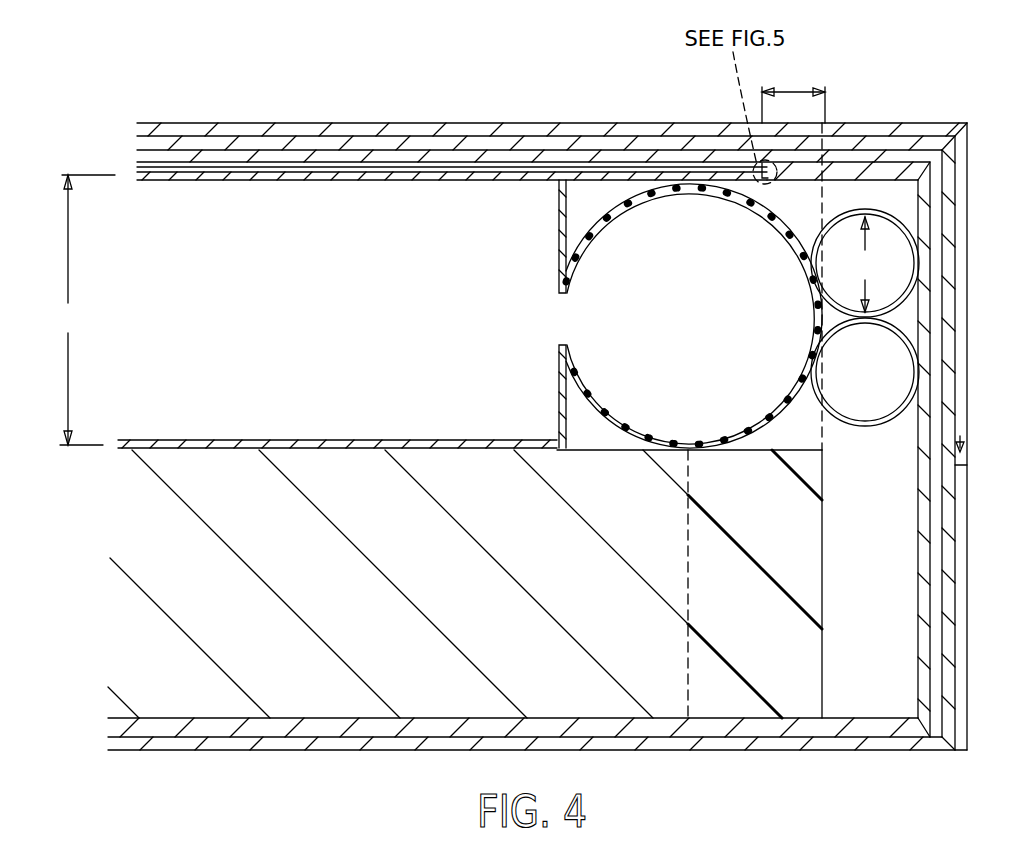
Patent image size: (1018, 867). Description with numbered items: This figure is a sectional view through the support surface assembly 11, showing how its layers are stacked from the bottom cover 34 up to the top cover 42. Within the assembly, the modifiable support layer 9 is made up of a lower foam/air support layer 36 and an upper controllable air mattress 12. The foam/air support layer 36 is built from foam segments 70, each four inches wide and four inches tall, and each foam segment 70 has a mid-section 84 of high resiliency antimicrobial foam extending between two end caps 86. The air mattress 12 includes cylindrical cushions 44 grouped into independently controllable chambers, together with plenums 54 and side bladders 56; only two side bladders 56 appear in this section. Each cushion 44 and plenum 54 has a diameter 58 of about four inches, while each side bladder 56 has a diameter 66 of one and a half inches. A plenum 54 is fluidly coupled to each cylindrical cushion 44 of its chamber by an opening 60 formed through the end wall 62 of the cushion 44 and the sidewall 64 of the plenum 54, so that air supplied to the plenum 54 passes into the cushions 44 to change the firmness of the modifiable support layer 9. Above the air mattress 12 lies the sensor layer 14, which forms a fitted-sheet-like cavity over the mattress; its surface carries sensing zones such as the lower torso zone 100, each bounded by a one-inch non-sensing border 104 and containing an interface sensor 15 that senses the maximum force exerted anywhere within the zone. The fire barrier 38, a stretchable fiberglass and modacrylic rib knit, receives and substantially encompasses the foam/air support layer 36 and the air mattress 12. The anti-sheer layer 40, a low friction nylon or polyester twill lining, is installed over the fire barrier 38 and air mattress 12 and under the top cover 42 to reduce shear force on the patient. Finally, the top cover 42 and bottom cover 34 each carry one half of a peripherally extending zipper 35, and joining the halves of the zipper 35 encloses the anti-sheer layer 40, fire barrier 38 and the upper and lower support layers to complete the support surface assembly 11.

The modifiable support layer 9 is at (97, 452).
The support surface assembly 11 is at (260, 90).
The air mattress 12 is at (887, 202).
The sensor layer 14 is at (850, 177).
The interface sensor 15 is at (672, 166).
The bottom cover 34 is at (960, 690).
The zipper 35 is at (968, 458).
The foam/air support layer 36 is at (835, 558).
The fire barrier 38 is at (530, 140).
The anti-sheer layer 40 is at (922, 140).
The top cover 42 is at (960, 367).
The cylindrical cushion 44 is at (150, 182).
The plenum 54 is at (592, 178).
The side bladder 56 is at (910, 236).
The diameter 58 is at (82, 310).
The opening 60 is at (566, 318).
The end wall 62 is at (557, 232).
The sidewall 64 is at (588, 240).
The diameter 66 is at (864, 264).
The foam segment 70 is at (410, 665).
The mid-section 84 is at (572, 680).
The end cap 86 is at (750, 678).
The lower torso zone 100 is at (793, 254).
The non-sensing border 104 is at (818, 172).